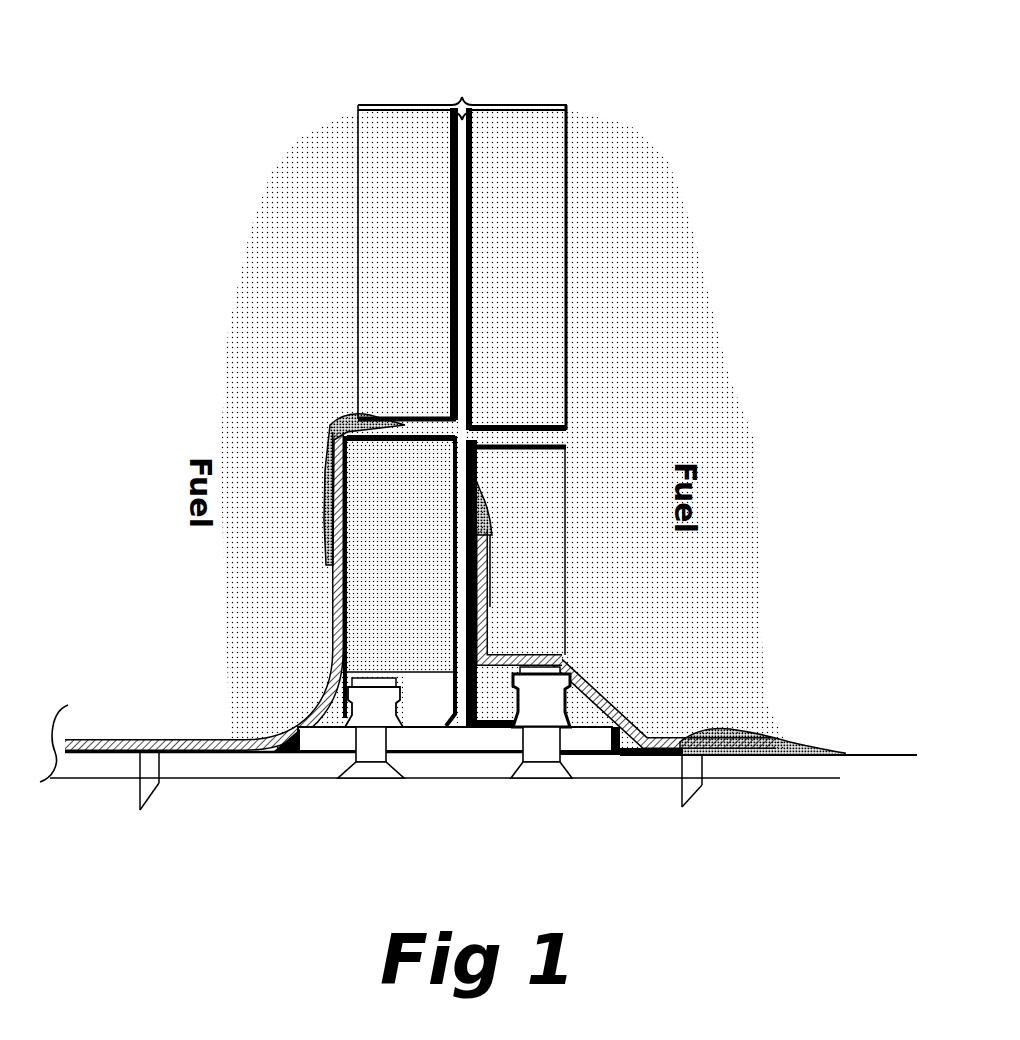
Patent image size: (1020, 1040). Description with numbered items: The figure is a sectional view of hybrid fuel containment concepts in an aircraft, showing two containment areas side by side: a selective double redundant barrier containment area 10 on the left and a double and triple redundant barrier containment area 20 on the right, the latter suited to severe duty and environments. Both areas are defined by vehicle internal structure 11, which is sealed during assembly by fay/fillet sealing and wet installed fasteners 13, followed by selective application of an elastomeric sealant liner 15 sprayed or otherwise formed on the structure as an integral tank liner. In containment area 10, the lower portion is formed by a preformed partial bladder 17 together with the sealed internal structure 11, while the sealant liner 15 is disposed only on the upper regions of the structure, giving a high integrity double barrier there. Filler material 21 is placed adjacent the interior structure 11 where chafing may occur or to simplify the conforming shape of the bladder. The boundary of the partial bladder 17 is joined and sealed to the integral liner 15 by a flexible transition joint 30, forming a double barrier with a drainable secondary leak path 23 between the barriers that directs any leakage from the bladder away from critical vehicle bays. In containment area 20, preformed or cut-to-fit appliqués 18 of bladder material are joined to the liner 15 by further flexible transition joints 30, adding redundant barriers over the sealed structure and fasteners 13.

The selective double redundant barrier containment area 10 is at (320, 202).
The vehicle internal structure 11 is at (462, 102).
The wet installed fasteners 13 is at (332, 754).
The elastomeric sealant liner 15 is at (450, 246).
The partial bladder 17 is at (330, 625).
The appliqués 18 is at (525, 653).
The double and triple redundant barrier containment area 20 is at (646, 202).
The filler material 21 is at (422, 587).
The drainable secondary leak path 23 is at (297, 718).
The flexible transition joints 30 is at (336, 420).